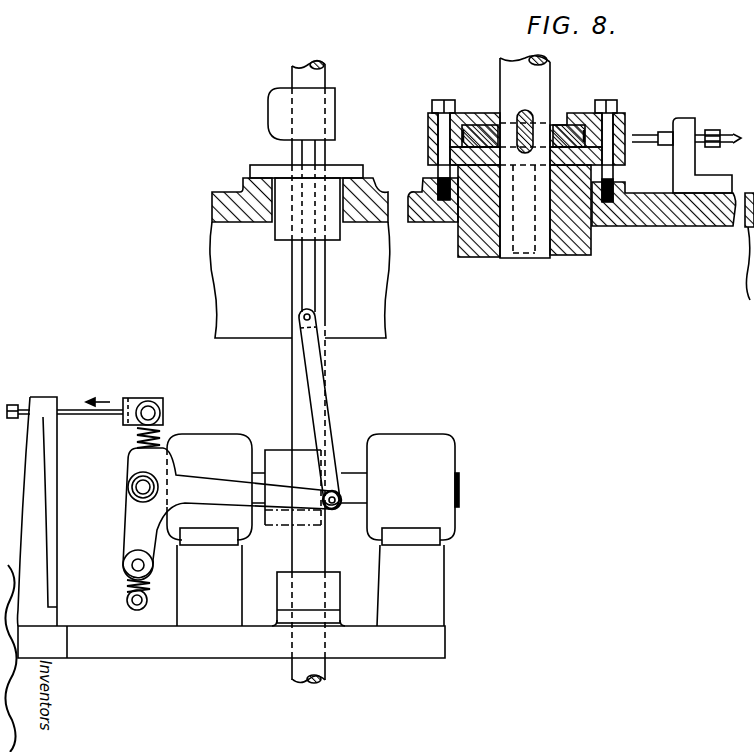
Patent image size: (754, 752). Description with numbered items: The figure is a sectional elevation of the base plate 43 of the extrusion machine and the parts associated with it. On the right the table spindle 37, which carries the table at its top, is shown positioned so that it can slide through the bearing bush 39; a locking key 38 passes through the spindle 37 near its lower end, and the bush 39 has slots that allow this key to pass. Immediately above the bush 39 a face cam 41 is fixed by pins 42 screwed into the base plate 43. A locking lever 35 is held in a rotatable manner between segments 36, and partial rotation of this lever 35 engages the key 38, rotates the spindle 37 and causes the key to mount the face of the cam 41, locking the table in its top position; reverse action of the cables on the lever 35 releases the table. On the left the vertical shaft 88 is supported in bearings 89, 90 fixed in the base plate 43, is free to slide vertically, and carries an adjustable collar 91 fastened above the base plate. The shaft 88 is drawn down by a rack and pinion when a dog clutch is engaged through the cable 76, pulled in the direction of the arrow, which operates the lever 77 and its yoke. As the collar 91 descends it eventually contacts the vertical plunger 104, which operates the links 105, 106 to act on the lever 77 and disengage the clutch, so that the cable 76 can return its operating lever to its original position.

The locking lever 35 is at (487, 125).
The segments 36 is at (430, 122).
The table spindle 37 is at (512, 258).
The locking key 38 is at (534, 113).
The bearing bush 39 is at (465, 253).
The face cam 41 is at (430, 160).
The pins 42 is at (443, 117).
The base plate 43 is at (379, 191).
The cable 76 is at (97, 415).
The lever 77 is at (137, 462).
The vertical shaft 88 is at (297, 413).
The bearing 89 is at (327, 599).
The bearing 90 is at (287, 228).
The adjustable collar 91 is at (278, 112).
The vertical plunger 104 is at (313, 154).
The link 105 is at (318, 417).
The link 106 is at (287, 497).